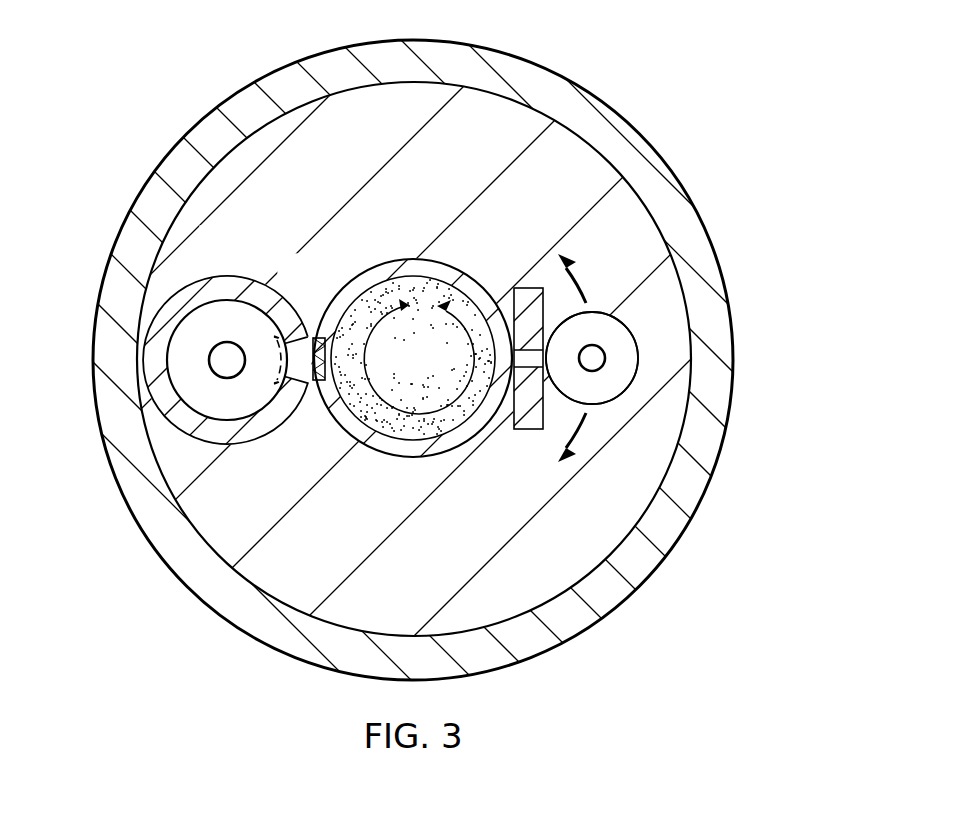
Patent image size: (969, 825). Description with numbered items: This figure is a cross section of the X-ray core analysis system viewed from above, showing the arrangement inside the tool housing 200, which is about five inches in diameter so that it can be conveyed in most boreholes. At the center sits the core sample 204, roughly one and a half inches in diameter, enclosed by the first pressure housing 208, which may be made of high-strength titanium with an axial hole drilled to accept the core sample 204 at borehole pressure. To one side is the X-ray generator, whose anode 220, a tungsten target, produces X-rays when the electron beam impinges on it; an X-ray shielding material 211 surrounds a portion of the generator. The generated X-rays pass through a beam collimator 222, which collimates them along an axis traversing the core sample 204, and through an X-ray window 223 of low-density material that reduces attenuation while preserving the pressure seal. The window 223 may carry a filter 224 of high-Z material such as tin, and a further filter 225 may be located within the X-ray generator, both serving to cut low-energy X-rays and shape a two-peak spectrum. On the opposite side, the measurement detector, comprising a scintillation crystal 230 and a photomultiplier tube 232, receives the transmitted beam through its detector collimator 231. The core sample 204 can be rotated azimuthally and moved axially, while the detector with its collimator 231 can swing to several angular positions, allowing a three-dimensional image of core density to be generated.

The tool housing 200 is at (525, 58).
The core sample 204 is at (390, 373).
The first pressure housing 208 is at (470, 290).
The X-ray shielding material 211 is at (150, 357).
The anode 220 is at (215, 342).
The beam collimator 222 is at (288, 388).
The X-ray window 223 is at (320, 330).
The filter 224 is at (320, 385).
The filter 225 is at (297, 367).
The scintillation crystal 230 is at (592, 345).
The detector collimator 231 is at (530, 288).
The photomultiplier tube 232 is at (625, 350).